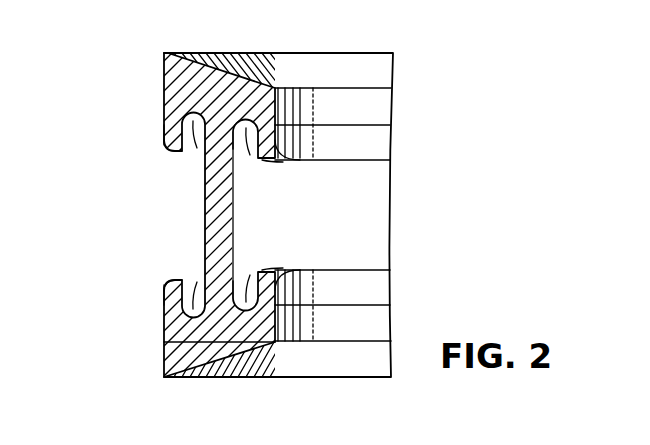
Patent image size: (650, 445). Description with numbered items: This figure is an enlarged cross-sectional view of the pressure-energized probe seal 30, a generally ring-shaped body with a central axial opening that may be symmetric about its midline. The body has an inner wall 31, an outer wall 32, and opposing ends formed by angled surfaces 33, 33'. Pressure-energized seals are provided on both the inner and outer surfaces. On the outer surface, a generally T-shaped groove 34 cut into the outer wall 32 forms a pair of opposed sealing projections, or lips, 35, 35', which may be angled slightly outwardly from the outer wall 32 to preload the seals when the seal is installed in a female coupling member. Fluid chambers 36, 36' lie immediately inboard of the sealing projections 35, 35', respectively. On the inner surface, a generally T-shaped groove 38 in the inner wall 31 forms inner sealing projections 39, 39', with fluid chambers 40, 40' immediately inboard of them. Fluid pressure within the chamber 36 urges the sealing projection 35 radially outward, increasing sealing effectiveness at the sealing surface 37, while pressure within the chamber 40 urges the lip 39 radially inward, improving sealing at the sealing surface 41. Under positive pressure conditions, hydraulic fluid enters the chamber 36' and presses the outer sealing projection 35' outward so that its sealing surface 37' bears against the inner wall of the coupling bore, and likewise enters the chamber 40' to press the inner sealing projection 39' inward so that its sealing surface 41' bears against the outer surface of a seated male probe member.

The pressure-energized probe seal 30 is at (424, 101).
The inner wall 31 is at (356, 118).
The outer wall 32 is at (163, 343).
The angled surface 33 is at (231, 52).
The angled surface 33' is at (233, 379).
The T-shaped groove 34 is at (200, 223).
The sealing projection 35 is at (136, 133).
The sealing projection 35' is at (136, 298).
The fluid chamber 36 is at (145, 156).
The fluid chamber 36' is at (142, 273).
The sealing surface 37 is at (105, 148).
The sealing surface 37' is at (105, 281).
The T-shaped groove 38 is at (236, 224).
The sealing projection 39 is at (368, 124).
The sealing projection 39' is at (370, 305).
The fluid chamber 40 is at (298, 164).
The fluid chamber 40' is at (301, 267).
The sealing surface 41 is at (361, 176).
The sealing surface 41' is at (364, 256).